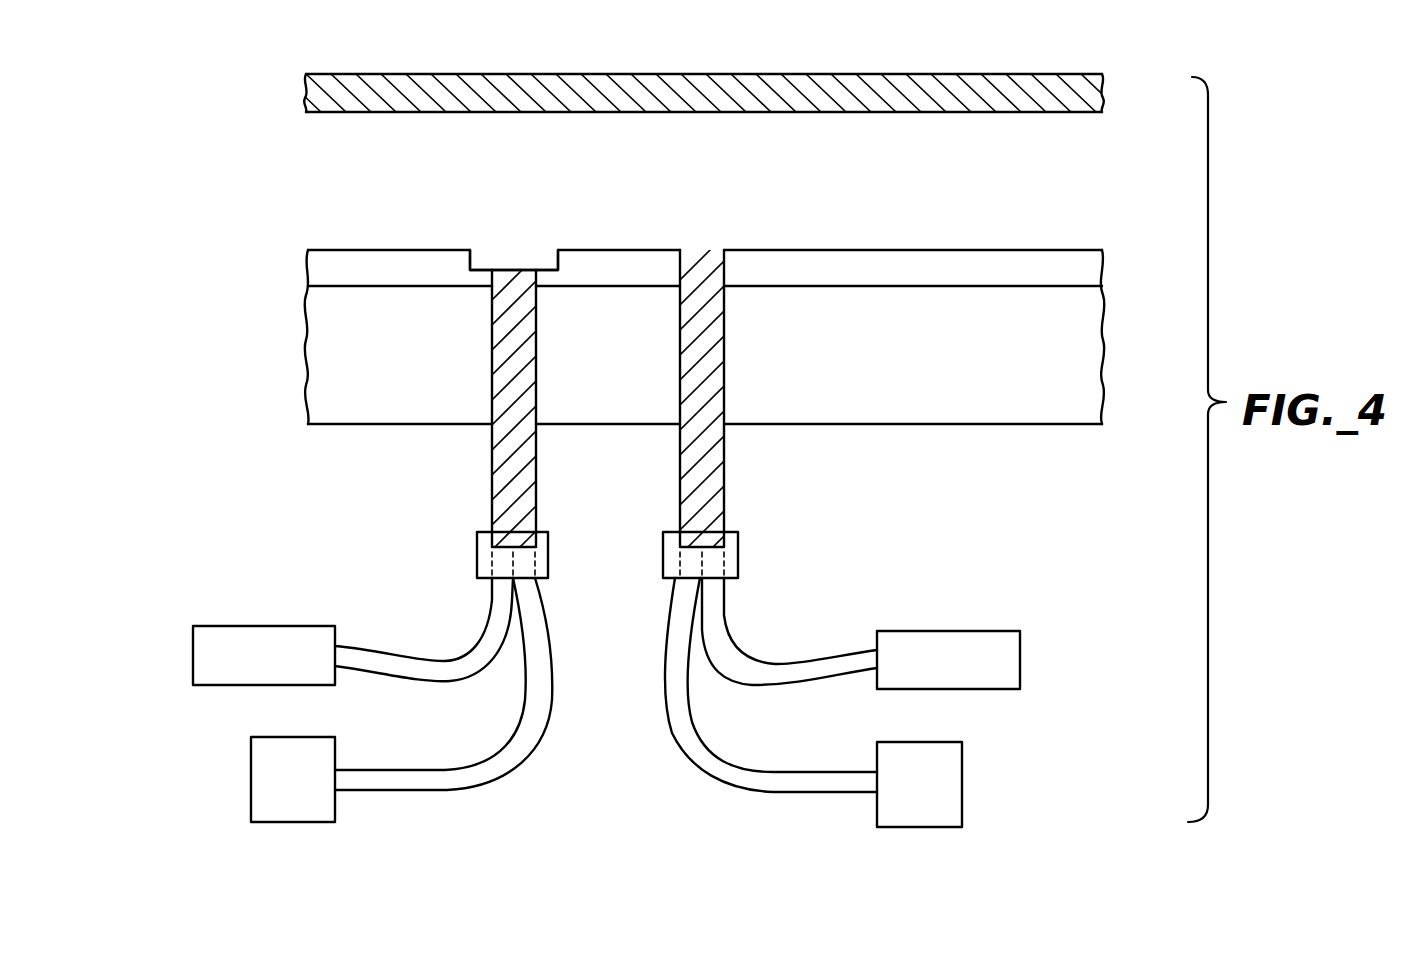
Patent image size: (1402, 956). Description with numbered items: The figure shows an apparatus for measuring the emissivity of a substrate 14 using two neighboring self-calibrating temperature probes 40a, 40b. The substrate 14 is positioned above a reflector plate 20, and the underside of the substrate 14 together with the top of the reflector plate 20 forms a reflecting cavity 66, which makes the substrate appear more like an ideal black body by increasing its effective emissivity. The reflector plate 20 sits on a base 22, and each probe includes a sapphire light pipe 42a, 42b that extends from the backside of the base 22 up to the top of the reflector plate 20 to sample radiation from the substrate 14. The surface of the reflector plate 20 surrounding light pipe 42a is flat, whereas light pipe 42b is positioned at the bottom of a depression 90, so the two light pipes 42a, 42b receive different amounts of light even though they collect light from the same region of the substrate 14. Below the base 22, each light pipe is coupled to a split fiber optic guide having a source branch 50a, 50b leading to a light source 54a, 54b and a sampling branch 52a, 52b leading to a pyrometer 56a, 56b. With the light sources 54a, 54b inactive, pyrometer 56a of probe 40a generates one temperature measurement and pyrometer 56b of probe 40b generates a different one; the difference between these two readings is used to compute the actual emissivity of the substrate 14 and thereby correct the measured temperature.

The substrate 14 is at (882, 105).
The reflecting cavity 66 is at (739, 199).
The reflector plate 20 is at (942, 262).
The depression 90 is at (472, 257).
The base 22 is at (1085, 342).
The light pipe 42a is at (715, 465).
The light pipe 42b is at (498, 477).
The source branch 50a is at (770, 667).
The source branch 50b is at (438, 667).
The sampling branch 52a is at (758, 780).
The sampling branch 52b is at (437, 783).
The light source 54a is at (943, 640).
The light source 54b is at (300, 635).
The pyrometer 56a is at (930, 747).
The pyrometer 56b is at (297, 807).
The self-calibrating temperature probe 40a is at (1068, 710).
The self-calibrating temperature probe 40b is at (156, 771).